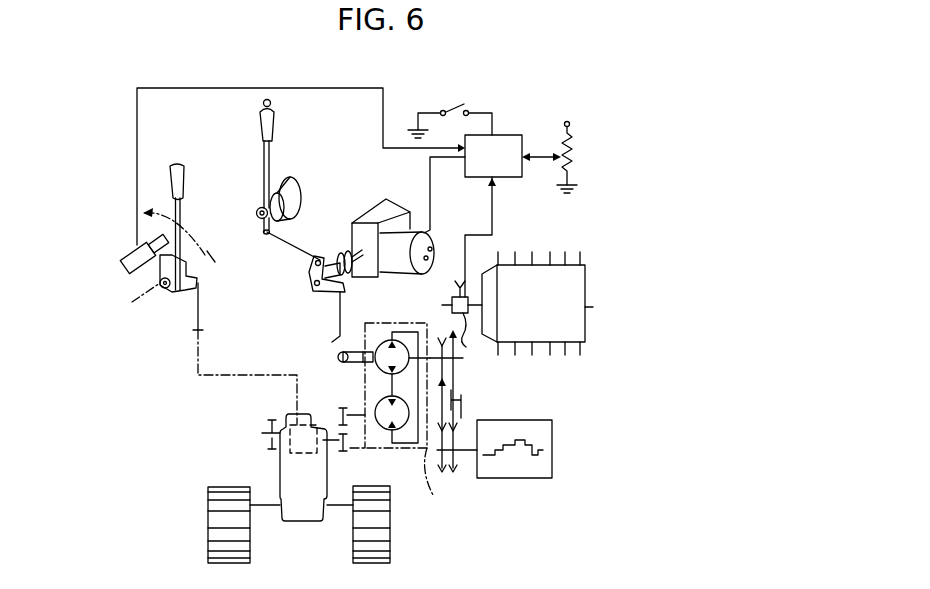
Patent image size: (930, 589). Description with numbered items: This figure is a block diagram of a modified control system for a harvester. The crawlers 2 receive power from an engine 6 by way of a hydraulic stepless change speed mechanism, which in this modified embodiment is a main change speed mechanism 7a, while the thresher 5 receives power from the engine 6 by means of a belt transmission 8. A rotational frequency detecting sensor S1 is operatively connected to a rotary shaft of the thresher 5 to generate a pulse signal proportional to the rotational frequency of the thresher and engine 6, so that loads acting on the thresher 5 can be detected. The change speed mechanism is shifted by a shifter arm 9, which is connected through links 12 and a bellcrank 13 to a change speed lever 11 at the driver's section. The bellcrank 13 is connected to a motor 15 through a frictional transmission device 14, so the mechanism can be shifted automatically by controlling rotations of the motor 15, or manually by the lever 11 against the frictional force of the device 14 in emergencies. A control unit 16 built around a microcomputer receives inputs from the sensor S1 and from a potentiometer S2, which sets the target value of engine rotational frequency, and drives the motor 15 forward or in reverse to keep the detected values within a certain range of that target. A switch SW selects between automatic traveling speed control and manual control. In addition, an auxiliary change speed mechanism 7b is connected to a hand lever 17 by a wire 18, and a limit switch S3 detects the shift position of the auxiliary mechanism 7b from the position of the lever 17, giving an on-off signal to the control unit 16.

The crawlers 2 is at (227, 487).
The thresher 5 is at (591, 260).
The engine 6 is at (523, 478).
The main change speed mechanism 7a is at (391, 422).
The auxiliary change speed mechanism 7b is at (287, 418).
The belt transmission 8 is at (472, 408).
The shifter arm 9 is at (348, 365).
The change speed lever 11 is at (273, 120).
The links 12 is at (272, 246).
The bellcrank 13 is at (317, 285).
The frictional transmission device 14 is at (341, 242).
The motor 15 is at (407, 273).
The control unit 16 is at (493, 156).
The hand lever 17 is at (180, 163).
The wire 18 is at (197, 315).
The rotational frequency detecting sensor S1 is at (464, 329).
The potentiometer S2 is at (561, 158).
The limit switch S3 is at (132, 250).
The switch SW is at (450, 113).